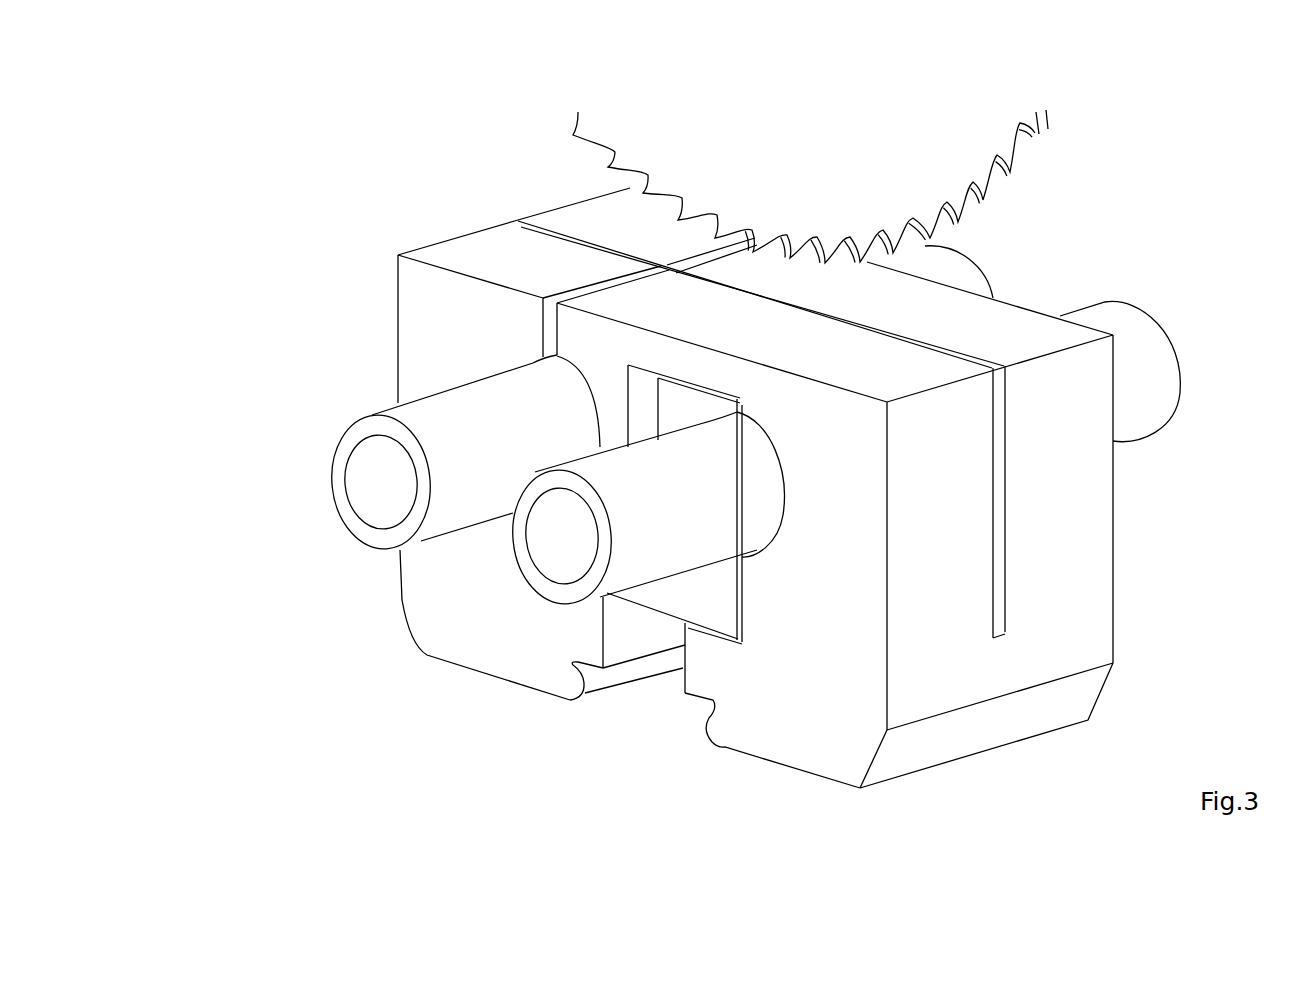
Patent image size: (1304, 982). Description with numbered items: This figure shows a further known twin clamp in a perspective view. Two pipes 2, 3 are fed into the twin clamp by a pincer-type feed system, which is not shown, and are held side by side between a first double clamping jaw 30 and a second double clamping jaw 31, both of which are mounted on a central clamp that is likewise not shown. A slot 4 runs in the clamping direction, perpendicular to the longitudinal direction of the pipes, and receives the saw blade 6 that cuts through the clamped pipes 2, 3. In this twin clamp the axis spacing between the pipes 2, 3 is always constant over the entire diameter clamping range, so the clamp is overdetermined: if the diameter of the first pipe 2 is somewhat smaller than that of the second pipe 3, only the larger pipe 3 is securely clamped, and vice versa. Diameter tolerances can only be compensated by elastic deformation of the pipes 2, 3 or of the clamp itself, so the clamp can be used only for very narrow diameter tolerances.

The first pipe 2 is at (367, 474).
The second pipe 3 is at (553, 540).
The slot 4 is at (997, 511).
The saw blade 6 is at (932, 123).
The first double clamping jaw 30 is at (502, 646).
The second double clamping jaw 31 is at (1060, 648).